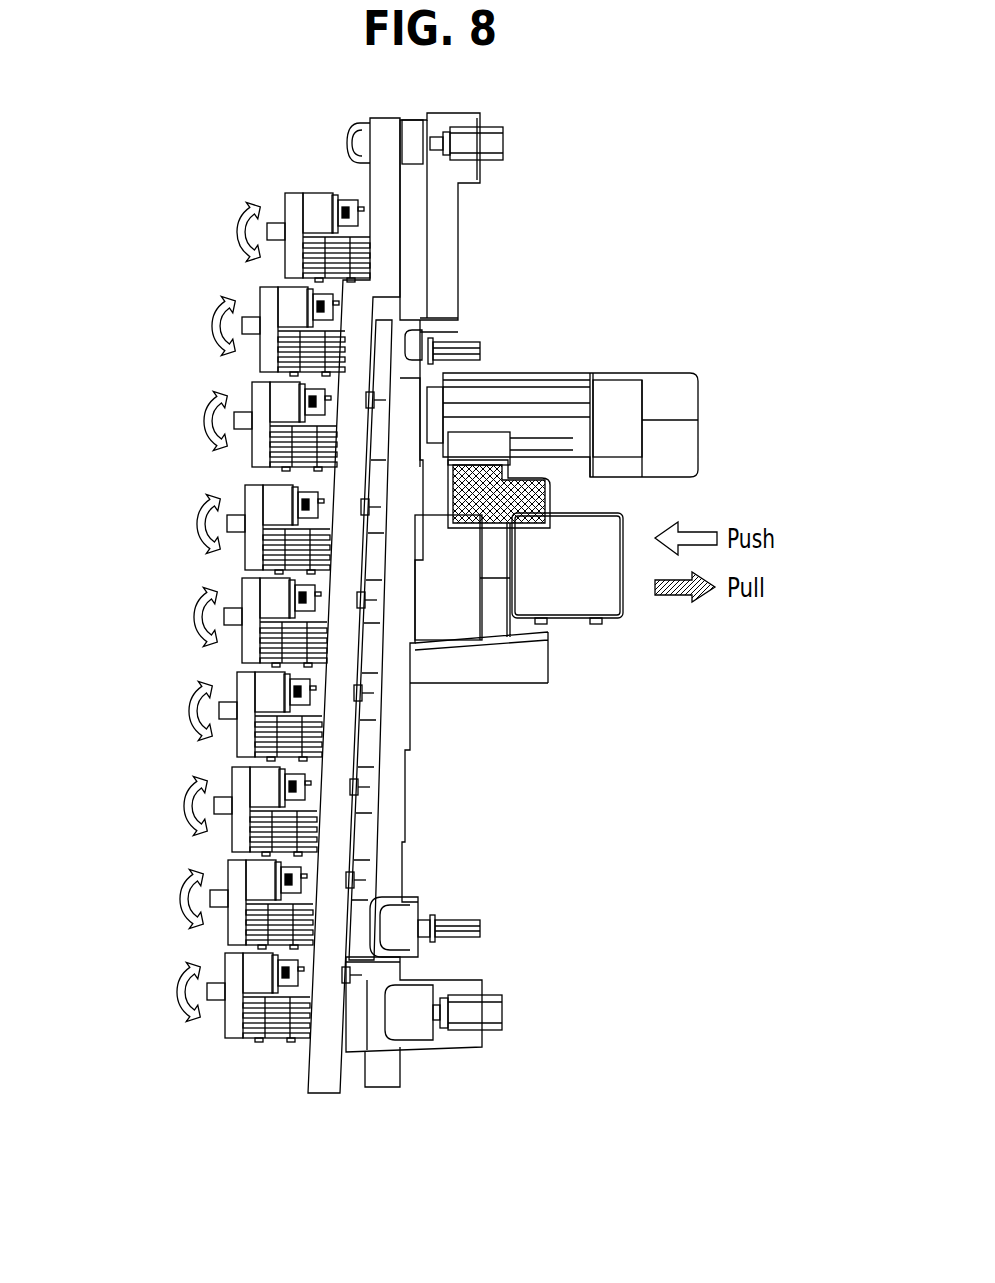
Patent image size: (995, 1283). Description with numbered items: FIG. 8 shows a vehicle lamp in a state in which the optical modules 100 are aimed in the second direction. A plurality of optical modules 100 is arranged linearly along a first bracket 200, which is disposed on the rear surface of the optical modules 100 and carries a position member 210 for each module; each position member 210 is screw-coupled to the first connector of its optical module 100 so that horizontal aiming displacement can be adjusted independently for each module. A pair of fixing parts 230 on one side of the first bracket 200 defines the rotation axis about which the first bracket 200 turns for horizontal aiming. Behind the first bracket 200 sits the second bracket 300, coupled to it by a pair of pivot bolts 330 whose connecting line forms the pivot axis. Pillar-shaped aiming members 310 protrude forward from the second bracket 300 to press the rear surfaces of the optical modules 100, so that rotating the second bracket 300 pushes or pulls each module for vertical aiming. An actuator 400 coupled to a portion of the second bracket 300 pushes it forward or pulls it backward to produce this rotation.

The optical module 100 is at (289, 201).
The first bracket 200 is at (325, 1094).
The position member 210 is at (356, 207).
The fixing part 230 is at (493, 350).
The second bracket 300 is at (382, 1091).
The aiming member 310 is at (420, 266).
The pivot bolt 330 is at (498, 135).
The actuator 400 is at (597, 632).